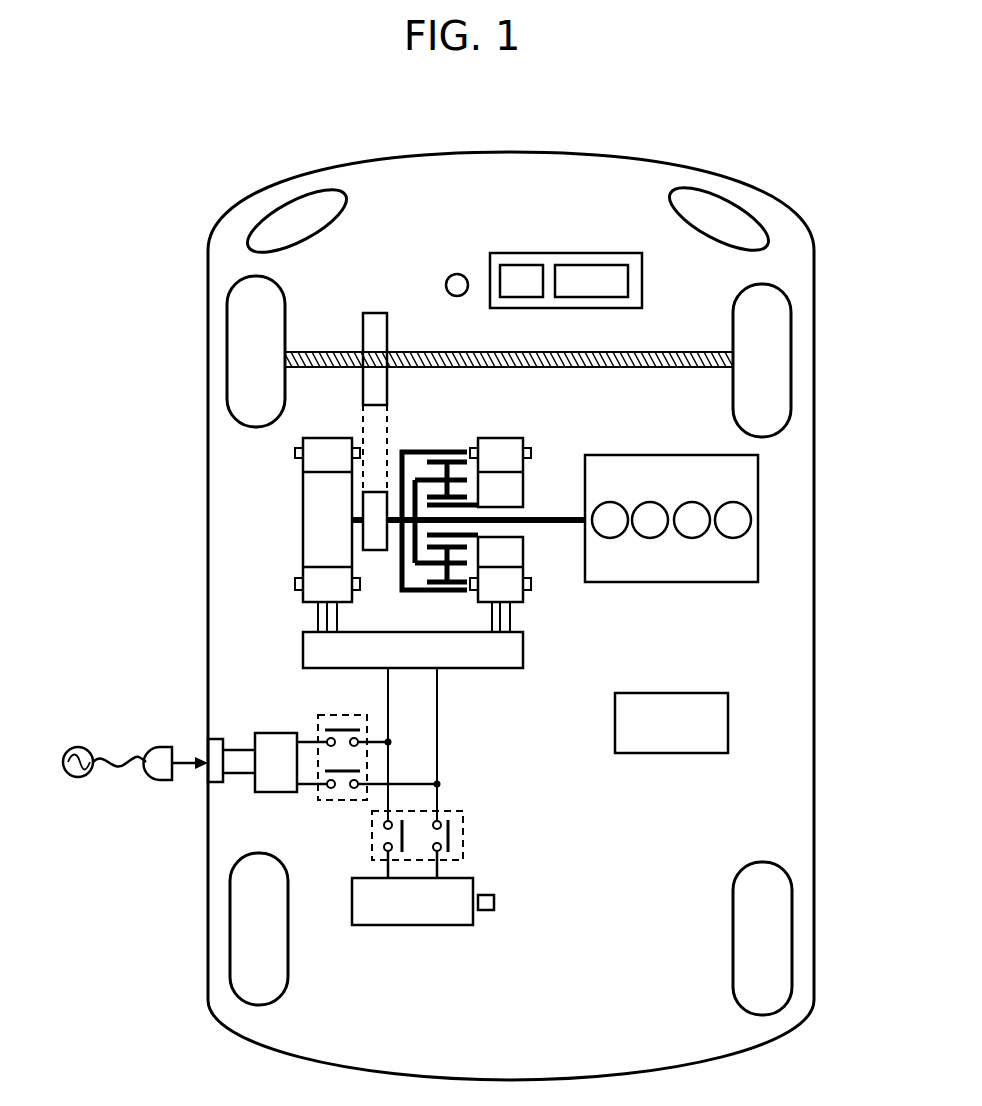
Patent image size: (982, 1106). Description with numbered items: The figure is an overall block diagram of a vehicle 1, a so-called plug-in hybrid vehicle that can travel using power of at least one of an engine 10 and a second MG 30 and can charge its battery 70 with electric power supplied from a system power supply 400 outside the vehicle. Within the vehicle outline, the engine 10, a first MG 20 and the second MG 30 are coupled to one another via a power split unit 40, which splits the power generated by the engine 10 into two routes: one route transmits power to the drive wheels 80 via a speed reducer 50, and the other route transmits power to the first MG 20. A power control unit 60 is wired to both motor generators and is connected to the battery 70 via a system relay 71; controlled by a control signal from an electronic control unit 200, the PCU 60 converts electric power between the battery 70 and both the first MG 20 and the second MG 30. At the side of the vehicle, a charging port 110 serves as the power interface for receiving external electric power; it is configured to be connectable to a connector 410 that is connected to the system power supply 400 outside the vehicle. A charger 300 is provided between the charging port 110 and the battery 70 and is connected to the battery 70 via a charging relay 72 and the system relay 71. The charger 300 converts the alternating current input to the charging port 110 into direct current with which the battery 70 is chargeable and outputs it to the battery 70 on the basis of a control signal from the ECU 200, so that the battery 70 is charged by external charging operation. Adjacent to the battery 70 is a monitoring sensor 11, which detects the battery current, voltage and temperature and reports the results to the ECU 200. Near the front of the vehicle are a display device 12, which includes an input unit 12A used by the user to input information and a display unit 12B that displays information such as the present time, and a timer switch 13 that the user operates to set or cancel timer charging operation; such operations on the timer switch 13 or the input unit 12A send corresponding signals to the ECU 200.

The vehicle 1 is at (504, 124).
The engine 10 is at (611, 455).
The monitoring sensor 11 is at (487, 910).
The display device 12 is at (566, 253).
The input unit 12A is at (523, 265).
The display unit 12B is at (608, 265).
The timer switch 13 is at (458, 274).
The first motor generator 20 is at (497, 438).
The second motor generator 30 is at (330, 438).
The power split unit 40 is at (442, 452).
The speed reducer 50 is at (373, 313).
The power control unit 60 is at (303, 650).
The battery 70 is at (400, 925).
The system relay 71 is at (463, 835).
The charging relay 72 is at (345, 800).
The drive wheels 80 is at (742, 287).
The charging port 110 is at (215, 739).
The electronic control unit 200 is at (670, 753).
The charger 300 is at (280, 792).
The system power supply 400 is at (80, 747).
The connector 410 is at (162, 746).